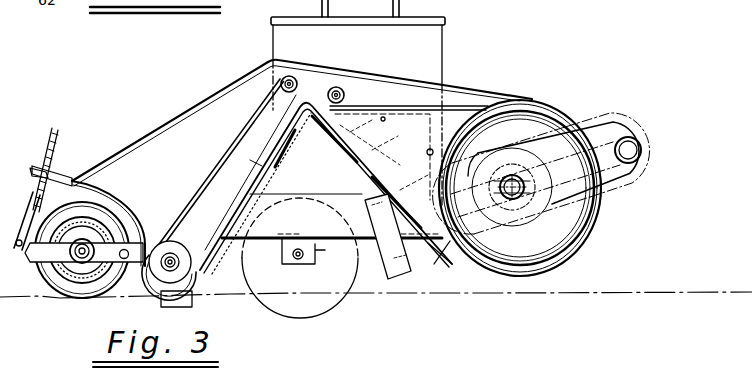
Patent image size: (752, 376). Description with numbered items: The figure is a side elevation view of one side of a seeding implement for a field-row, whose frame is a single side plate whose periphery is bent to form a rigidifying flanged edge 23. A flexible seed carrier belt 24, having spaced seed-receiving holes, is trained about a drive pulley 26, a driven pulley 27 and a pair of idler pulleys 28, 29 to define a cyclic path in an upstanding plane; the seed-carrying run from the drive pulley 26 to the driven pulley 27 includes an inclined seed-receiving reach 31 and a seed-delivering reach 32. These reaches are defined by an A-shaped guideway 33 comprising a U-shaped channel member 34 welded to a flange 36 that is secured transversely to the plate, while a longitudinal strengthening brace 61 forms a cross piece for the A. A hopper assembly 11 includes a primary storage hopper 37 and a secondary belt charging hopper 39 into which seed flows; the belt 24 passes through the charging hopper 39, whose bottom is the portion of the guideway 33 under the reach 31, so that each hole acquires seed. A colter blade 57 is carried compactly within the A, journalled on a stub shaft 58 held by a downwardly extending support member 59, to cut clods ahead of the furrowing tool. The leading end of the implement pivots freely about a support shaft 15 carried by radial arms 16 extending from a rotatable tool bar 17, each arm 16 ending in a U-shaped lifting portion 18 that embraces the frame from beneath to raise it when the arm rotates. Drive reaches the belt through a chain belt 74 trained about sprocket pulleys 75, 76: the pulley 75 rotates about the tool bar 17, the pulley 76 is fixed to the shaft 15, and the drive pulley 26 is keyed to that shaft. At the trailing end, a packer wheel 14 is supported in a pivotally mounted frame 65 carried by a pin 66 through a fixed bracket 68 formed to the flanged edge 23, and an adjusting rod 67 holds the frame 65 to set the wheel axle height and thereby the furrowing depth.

The hopper assembly 11 is at (440, 42).
The packer wheel 14 is at (77, 290).
The support shaft 15 is at (512, 176).
The radial arm 16 is at (436, 254).
The tool bar 17 is at (642, 140).
The U-shaped lifting portion 18 is at (385, 221).
The flanged edge 23 is at (170, 130).
The seed carrier belt 24 is at (230, 142).
The drive pulley 26 is at (548, 110).
The driven pulley 27 is at (176, 244).
The idler pulley 28 is at (280, 87).
The idler pulley 29 is at (344, 93).
The seed-receiving reach 31 is at (366, 172).
The seed-delivering reach 32 is at (258, 162).
The guideway 33 is at (290, 106).
The channel member 34 is at (220, 233).
The flange 36 is at (304, 128).
The primary storage hopper 37 is at (402, 58).
The belt charging hopper 39 is at (413, 163).
The colter blade 57 is at (318, 306).
The stub shaft 58 is at (290, 261).
The support member 59 is at (320, 248).
The longitudinal strengthening brace 61 is at (338, 193).
The pivotally mounted frame 65 is at (47, 260).
The pin 66 is at (108, 294).
The adjusting rod 67 is at (44, 150).
The fixed bracket 68 is at (143, 218).
The chain belt 74 is at (615, 196).
The sprocket pulley 75 is at (593, 125).
The sprocket pulley 76 is at (520, 188).